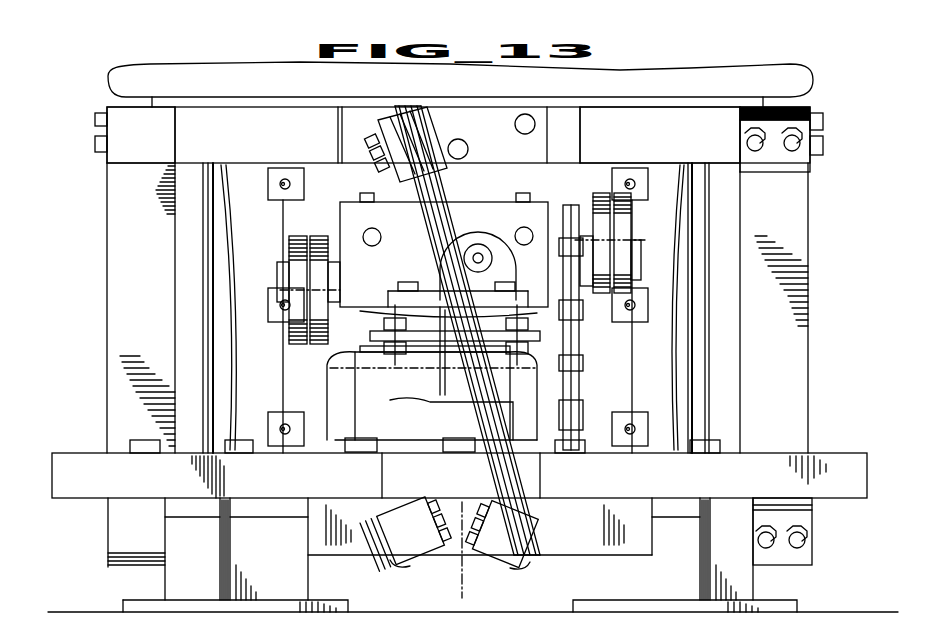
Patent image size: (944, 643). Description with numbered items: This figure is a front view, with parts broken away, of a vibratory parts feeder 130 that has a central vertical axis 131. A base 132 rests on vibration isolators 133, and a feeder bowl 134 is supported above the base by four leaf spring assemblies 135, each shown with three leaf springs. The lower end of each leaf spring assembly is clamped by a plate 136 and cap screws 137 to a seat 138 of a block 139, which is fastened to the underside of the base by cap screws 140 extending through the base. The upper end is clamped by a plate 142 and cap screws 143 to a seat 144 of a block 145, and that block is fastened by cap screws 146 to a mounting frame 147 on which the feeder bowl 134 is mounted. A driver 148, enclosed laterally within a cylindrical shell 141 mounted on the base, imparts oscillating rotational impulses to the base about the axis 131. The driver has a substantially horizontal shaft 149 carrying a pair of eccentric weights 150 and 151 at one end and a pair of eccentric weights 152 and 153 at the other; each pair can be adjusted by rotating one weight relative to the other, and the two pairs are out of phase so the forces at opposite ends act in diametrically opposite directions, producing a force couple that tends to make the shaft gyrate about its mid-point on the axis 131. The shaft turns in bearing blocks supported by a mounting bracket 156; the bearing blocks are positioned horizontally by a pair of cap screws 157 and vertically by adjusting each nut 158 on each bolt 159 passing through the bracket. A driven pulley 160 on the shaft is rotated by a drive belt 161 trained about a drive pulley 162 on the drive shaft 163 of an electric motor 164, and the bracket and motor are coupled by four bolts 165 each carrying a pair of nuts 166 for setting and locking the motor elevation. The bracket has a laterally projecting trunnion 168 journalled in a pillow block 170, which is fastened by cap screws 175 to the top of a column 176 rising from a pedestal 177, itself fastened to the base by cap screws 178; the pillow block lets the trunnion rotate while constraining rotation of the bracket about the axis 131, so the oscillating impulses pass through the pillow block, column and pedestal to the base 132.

The vibratory parts feeder 130 is at (150, 42).
The central vertical axis 131 is at (472, 600).
The base 132 is at (74, 462).
The vibration isolators 133 is at (178, 583).
The feeder bowl 134 is at (812, 74).
The leaf spring assemblies 135 is at (107, 199).
The plate 136 is at (412, 566).
The cap screws 137 is at (440, 566).
The seat 138 is at (392, 556).
The block 139 is at (115, 527).
The cap screws 140 is at (128, 447).
The cylindrical shell 141 is at (212, 239).
The plate 142 is at (806, 174).
The cap screws 143 is at (790, 150).
The seat 144 is at (412, 110).
The block 145 is at (150, 144).
The cap screws 146 is at (94, 121).
The mounting frame 147 is at (682, 129).
The driver 148 is at (622, 178).
The shaft 149 is at (622, 262).
The eccentric weight 150 is at (290, 241).
The eccentric weight 151 is at (292, 351).
The eccentric weight 152 is at (601, 196).
The eccentric weight 153 is at (626, 213).
The mounting bracket 156 is at (342, 232).
The cap screws 157 is at (373, 243).
The nut 158 is at (340, 206).
The bolt 159 is at (367, 195).
The driven pulley 160 is at (570, 308).
The drive belt 161 is at (572, 352).
The drive pulley 162 is at (572, 388).
The drive shaft 163 is at (597, 422).
The electric motor 164 is at (336, 376).
The bolts 165 is at (398, 312).
The nuts 166 is at (373, 330).
The trunnion 168 is at (500, 256).
The pillow block 170 is at (434, 250).
The cap screws 175 is at (402, 278).
The column 176 is at (445, 318).
The pedestal 177 is at (408, 458).
The cap screws 178 is at (372, 448).